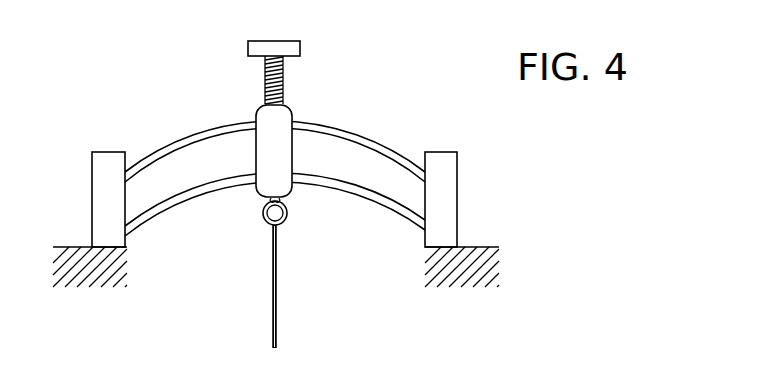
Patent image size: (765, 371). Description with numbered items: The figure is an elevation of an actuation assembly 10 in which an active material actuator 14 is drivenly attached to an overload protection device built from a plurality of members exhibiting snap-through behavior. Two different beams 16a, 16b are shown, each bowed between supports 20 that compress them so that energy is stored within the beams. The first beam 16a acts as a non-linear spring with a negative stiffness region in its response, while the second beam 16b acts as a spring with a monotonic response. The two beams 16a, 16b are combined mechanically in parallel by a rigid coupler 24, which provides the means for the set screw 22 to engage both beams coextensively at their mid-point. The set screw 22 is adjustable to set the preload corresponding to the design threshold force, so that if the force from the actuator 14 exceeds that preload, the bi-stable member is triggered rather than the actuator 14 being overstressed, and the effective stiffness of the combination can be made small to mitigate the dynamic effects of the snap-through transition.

The actuation assembly 10 is at (150, 76).
The actuator 14 is at (278, 307).
The first beam 16a is at (160, 152).
The second beam 16b is at (210, 192).
The support 20 is at (457, 178).
The set screw 22 is at (300, 45).
The rigid coupler 24 is at (292, 109).